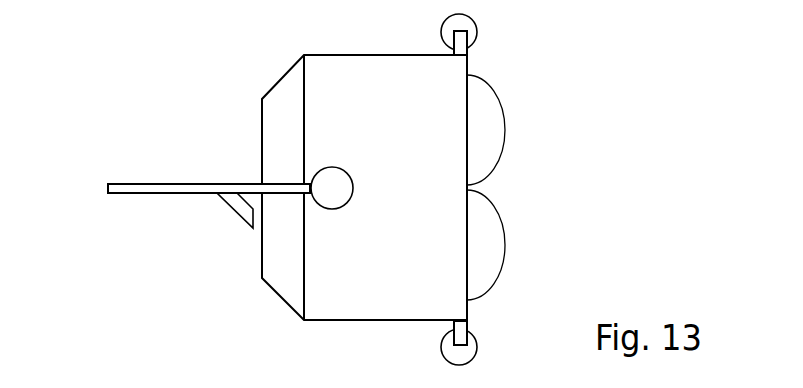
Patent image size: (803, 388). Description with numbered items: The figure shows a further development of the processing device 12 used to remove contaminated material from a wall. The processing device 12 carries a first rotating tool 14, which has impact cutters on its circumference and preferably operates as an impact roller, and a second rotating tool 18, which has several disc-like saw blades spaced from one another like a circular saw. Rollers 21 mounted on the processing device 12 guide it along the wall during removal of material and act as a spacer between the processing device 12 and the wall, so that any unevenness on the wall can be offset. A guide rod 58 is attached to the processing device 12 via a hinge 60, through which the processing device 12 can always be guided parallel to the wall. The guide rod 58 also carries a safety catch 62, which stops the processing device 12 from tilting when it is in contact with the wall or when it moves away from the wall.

The processing device 12 is at (276, 53).
The rotating tool 14 is at (490, 250).
The second rotating tool 18 is at (490, 129).
The rollers 21 is at (468, 29).
The guide rod 58 is at (148, 184).
The hinge 60 is at (333, 198).
The safety catch 62 is at (238, 205).